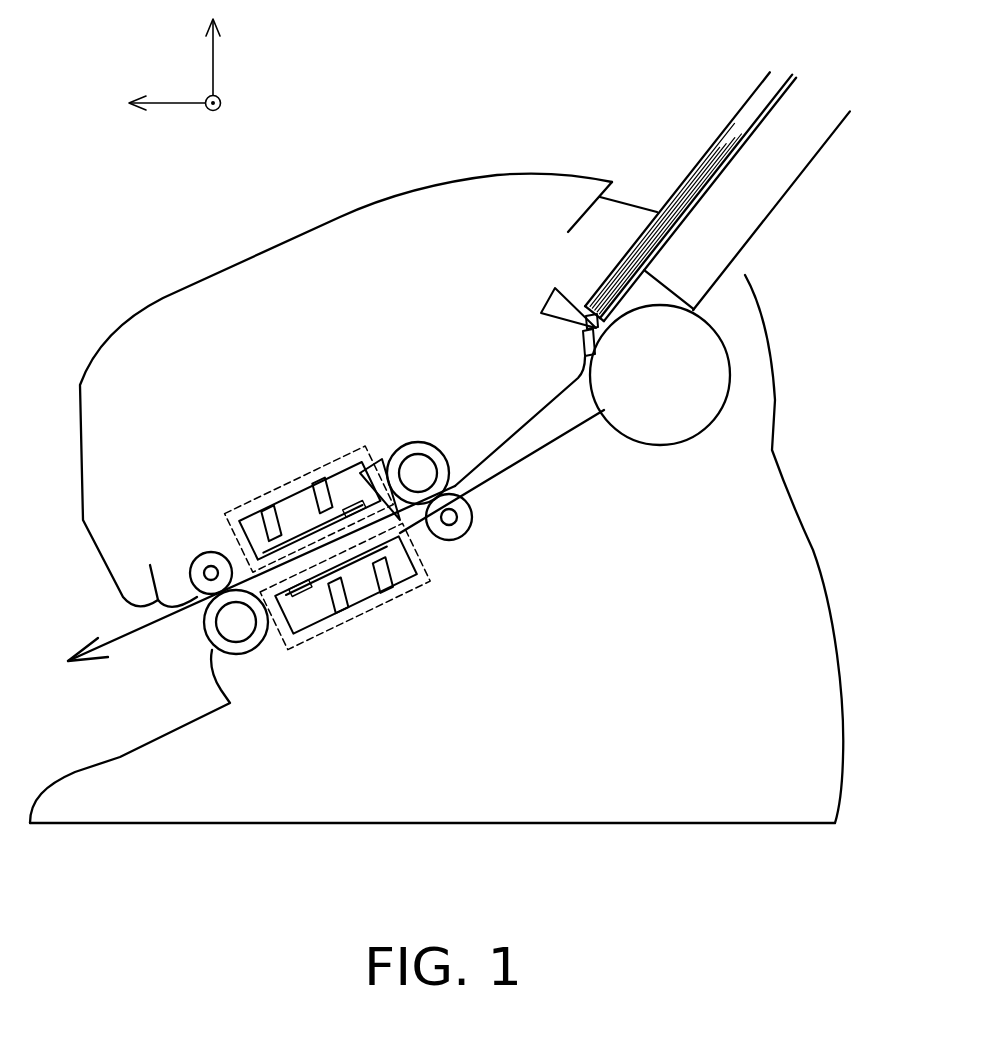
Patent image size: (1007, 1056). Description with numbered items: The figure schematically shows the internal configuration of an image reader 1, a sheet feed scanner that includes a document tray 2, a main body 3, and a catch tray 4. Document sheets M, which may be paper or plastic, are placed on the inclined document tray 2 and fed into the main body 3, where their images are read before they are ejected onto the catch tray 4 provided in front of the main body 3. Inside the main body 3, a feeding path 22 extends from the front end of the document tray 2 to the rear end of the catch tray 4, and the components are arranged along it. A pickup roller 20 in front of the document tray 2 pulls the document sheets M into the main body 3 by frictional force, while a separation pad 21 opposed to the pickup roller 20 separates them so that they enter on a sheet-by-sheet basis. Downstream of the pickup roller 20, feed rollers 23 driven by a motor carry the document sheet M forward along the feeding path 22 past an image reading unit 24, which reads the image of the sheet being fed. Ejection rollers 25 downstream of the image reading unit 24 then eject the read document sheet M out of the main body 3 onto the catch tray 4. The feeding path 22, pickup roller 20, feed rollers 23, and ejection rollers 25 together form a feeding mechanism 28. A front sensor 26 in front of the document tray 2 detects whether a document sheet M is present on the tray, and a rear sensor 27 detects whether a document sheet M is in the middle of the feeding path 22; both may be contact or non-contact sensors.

The image reader 1 is at (447, 106).
The document tray 2 is at (777, 167).
The main body 3 is at (522, 197).
The catch tray 4 is at (120, 755).
The pickup roller 20 is at (664, 422).
The separation pad 21 is at (583, 347).
The feeding path 22 is at (528, 430).
The feed rollers 23 is at (457, 512).
The image reading unit 24 is at (283, 483).
The ejection rollers 25 is at (238, 612).
The front sensor 26 is at (555, 307).
The rear sensor 27 is at (367, 460).
The feeding mechanism 28 is at (326, 305).
The document sheet M is at (707, 157).